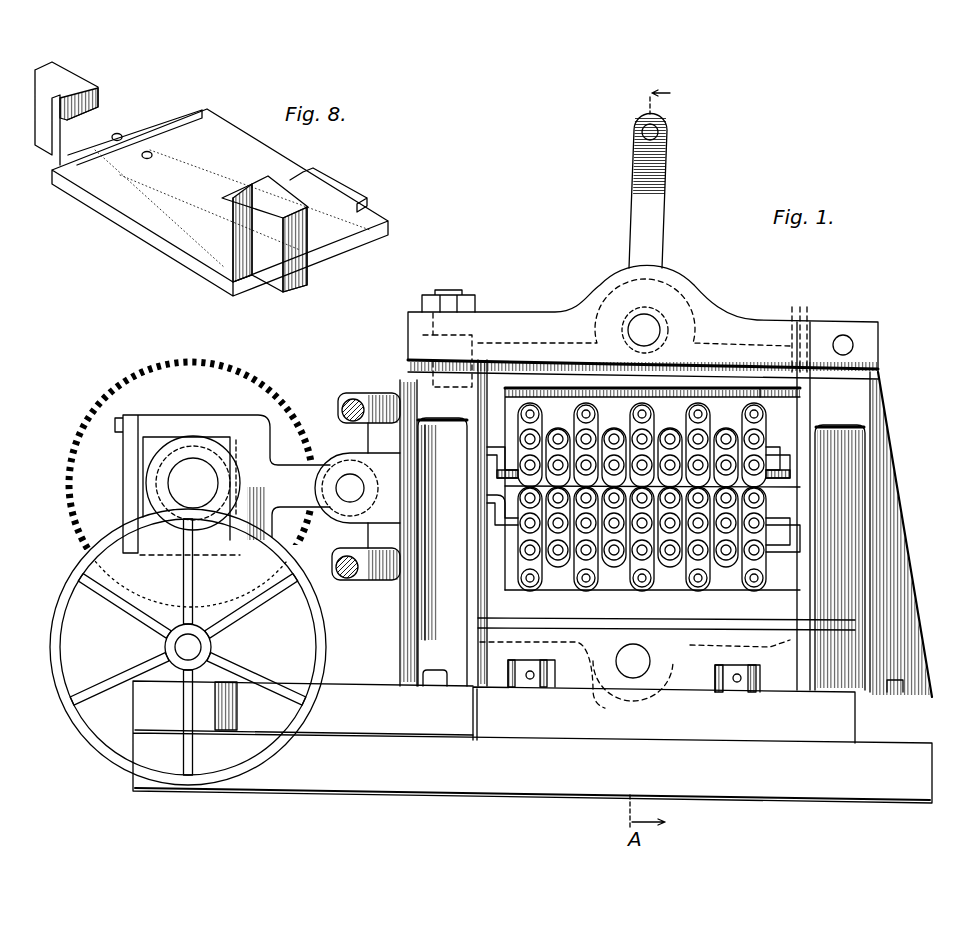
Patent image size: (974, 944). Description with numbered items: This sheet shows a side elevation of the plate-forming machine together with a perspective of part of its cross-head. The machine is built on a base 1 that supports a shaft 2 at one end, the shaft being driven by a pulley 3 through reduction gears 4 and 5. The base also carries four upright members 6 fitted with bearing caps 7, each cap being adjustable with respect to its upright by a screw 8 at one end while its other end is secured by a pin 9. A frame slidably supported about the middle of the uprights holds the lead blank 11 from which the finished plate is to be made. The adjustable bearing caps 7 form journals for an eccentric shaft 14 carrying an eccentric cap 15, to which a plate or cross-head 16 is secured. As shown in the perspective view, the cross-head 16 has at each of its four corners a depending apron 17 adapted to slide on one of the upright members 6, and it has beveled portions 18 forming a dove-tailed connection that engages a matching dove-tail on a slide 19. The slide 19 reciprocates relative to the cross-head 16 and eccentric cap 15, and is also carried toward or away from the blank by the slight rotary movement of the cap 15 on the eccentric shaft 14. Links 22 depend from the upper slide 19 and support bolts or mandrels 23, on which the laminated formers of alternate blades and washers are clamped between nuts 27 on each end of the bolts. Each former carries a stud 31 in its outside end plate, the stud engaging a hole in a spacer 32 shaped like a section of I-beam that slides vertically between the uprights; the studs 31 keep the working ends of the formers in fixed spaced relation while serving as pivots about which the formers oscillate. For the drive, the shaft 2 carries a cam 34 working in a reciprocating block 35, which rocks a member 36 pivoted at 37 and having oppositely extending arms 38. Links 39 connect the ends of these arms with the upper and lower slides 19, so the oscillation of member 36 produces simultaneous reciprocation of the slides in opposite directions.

In FIG. 1, the base 1 is at (935, 717).
In FIG. 1, the shaft 2 is at (178, 477).
In FIG. 1, the pulley 3 is at (62, 618).
In FIG. 1, the reduction gear 4 is at (212, 645).
In FIG. 1, the reduction gear 5 is at (232, 378).
In FIG. 1, the upright member 6 is at (407, 372).
In FIG. 1, the bearing cap 7 is at (590, 311).
In FIG. 1, the screw 8 is at (427, 342).
In FIG. 1, the pin 9 is at (843, 335).
In FIG. 1, the lead blank 11 is at (500, 378).
In FIG. 1, the eccentric shaft 14 is at (655, 306).
In FIG. 1, the eccentric cap 15 is at (682, 307).
In FIG. 8, the plate or cross-head 16 is at (352, 212).
In FIG. 1, the plate or cross-head 16 is at (545, 378).
In FIG. 8, the depending apron 17 is at (60, 75).
In FIG. 1, the depending apron 17 is at (799, 487).
In FIG. 8, the beveled portion 18 is at (190, 111).
In FIG. 1, the slide 19 is at (613, 381).
In FIG. 1, the link 22 is at (555, 630).
In FIG. 1, the bolt or mandrel 23 is at (764, 523).
In FIG. 1, the nut 27 is at (572, 428).
In FIG. 1, the stud 31 is at (518, 497).
In FIG. 1, the spacer 32 is at (490, 477).
In FIG. 1, the cam 34 is at (160, 488).
In FIG. 1, the reciprocating block 35 is at (148, 448).
In FIG. 1, the member 36 is at (331, 485).
In FIG. 1, the pivot 37 is at (345, 502).
In FIG. 1, the arm 38 is at (340, 436).
In FIG. 1, the link 39 is at (392, 395).